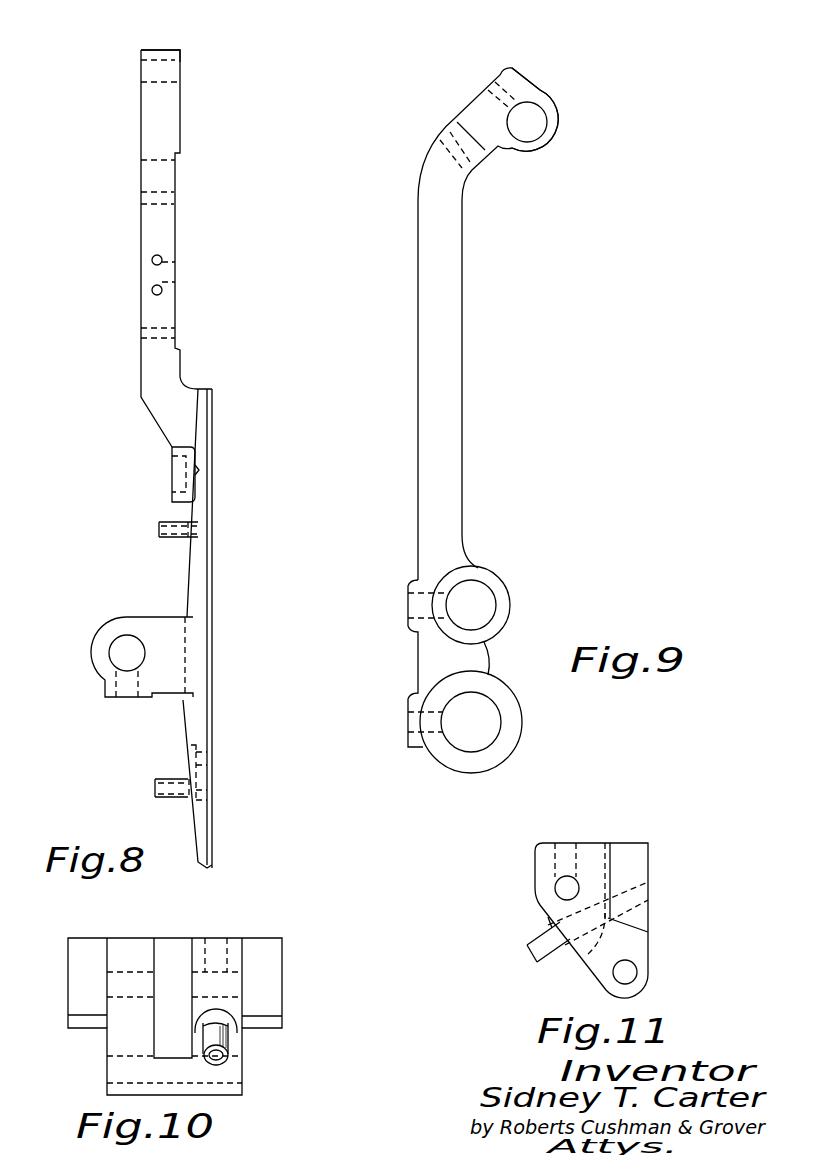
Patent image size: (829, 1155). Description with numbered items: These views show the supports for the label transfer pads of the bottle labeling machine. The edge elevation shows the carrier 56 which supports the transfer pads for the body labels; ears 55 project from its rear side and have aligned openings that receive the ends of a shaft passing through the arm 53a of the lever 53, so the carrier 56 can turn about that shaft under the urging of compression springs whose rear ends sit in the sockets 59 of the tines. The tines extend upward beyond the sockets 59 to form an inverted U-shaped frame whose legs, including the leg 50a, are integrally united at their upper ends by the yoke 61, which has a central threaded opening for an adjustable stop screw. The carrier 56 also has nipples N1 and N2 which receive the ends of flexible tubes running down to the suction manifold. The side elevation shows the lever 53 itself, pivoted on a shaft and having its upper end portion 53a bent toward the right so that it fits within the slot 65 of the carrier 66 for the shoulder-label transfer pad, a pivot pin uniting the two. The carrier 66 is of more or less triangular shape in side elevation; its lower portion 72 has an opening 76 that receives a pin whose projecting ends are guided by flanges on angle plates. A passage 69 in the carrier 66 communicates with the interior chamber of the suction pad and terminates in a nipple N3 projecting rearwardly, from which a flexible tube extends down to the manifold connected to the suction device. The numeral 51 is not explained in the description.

In FIG. 8, the yoke 61 is at (160, 53).
In FIG. 8, the leg 50a is at (143, 366).
In FIG. 8, the socket 59 is at (175, 462).
In FIG. 8, the nipple N2 is at (165, 536).
In FIG. 8, the ear 55 is at (117, 622).
In FIG. 9, the ear 55 is at (497, 749).
In FIG. 8, the carrier 56 is at (205, 648).
In FIG. 8, the nipple N1 is at (157, 797).
In FIG. 9, the arm of the lever 53a is at (513, 82).
In FIG. 9, the lever 53 is at (428, 452).
In FIG. 9, the hub 51 is at (486, 584).
In FIG. 10, the slot 65 is at (165, 953).
In FIG. 10, the carrier 66 is at (280, 923).
In FIG. 11, the carrier 66 is at (672, 880).
In FIG. 10, the nipple N3 is at (232, 1042).
In FIG. 11, the nipple N3 is at (548, 957).
In FIG. 11, the passage 69 is at (648, 896).
In FIG. 11, the lower portion 72 is at (646, 942).
In FIG. 11, the opening 76 is at (637, 973).